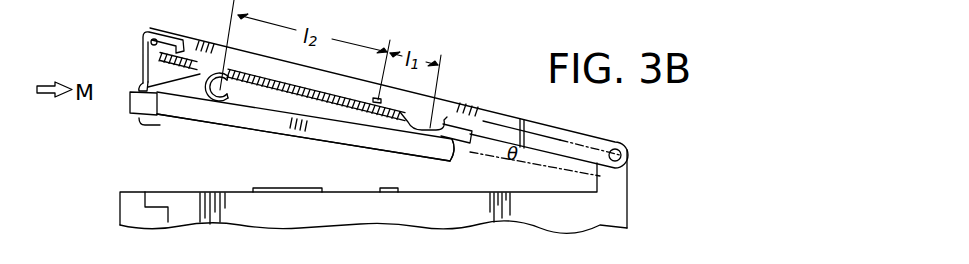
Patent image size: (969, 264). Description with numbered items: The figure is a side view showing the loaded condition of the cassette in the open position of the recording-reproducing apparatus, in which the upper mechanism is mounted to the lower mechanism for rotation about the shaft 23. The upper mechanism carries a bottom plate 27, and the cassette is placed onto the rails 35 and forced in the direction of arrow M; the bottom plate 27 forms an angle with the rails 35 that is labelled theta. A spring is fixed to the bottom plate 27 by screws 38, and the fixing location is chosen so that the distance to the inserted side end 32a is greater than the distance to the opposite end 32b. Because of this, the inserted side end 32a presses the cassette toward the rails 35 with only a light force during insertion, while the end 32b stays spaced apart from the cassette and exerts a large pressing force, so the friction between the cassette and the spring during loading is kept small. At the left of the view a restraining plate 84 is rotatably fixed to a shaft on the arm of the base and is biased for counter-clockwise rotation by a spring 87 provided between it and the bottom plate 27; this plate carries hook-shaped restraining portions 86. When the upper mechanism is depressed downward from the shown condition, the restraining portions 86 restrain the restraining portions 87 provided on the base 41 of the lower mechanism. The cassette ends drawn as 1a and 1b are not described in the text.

The plate 1a is at (188, 114).
The plate end 1b is at (443, 158).
The shaft 23 is at (625, 151).
The bottom plate 27 is at (287, 90).
The inserted side end of spring 32a is at (213, 70).
The end of spring 32b is at (430, 121).
The rails 35 is at (257, 131).
The screws 38 is at (322, 89).
The base 41 is at (210, 192).
The restraining plate 84 is at (143, 58).
The hook-shaped restraining portions 86 is at (138, 88).
The spring / restraining portions 87 is at (150, 192).